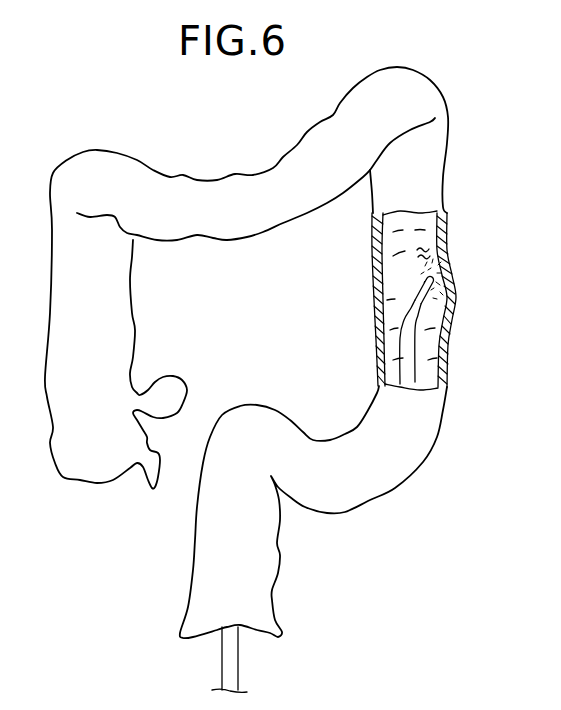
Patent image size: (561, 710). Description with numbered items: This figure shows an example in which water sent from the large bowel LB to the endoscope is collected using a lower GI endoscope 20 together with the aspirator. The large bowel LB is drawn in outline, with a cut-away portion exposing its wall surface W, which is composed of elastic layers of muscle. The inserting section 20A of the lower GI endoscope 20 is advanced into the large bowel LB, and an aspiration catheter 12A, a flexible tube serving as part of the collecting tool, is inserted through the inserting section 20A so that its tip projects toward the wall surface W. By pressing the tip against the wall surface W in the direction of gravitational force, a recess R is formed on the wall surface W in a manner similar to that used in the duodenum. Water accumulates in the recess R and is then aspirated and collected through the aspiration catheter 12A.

The aspiration catheter 12A is at (418, 292).
The inserting section 20A is at (403, 337).
The lower GI endoscope 20 is at (232, 662).
The recess R is at (437, 270).
The wall surface W is at (428, 343).
The large bowel LB is at (405, 465).